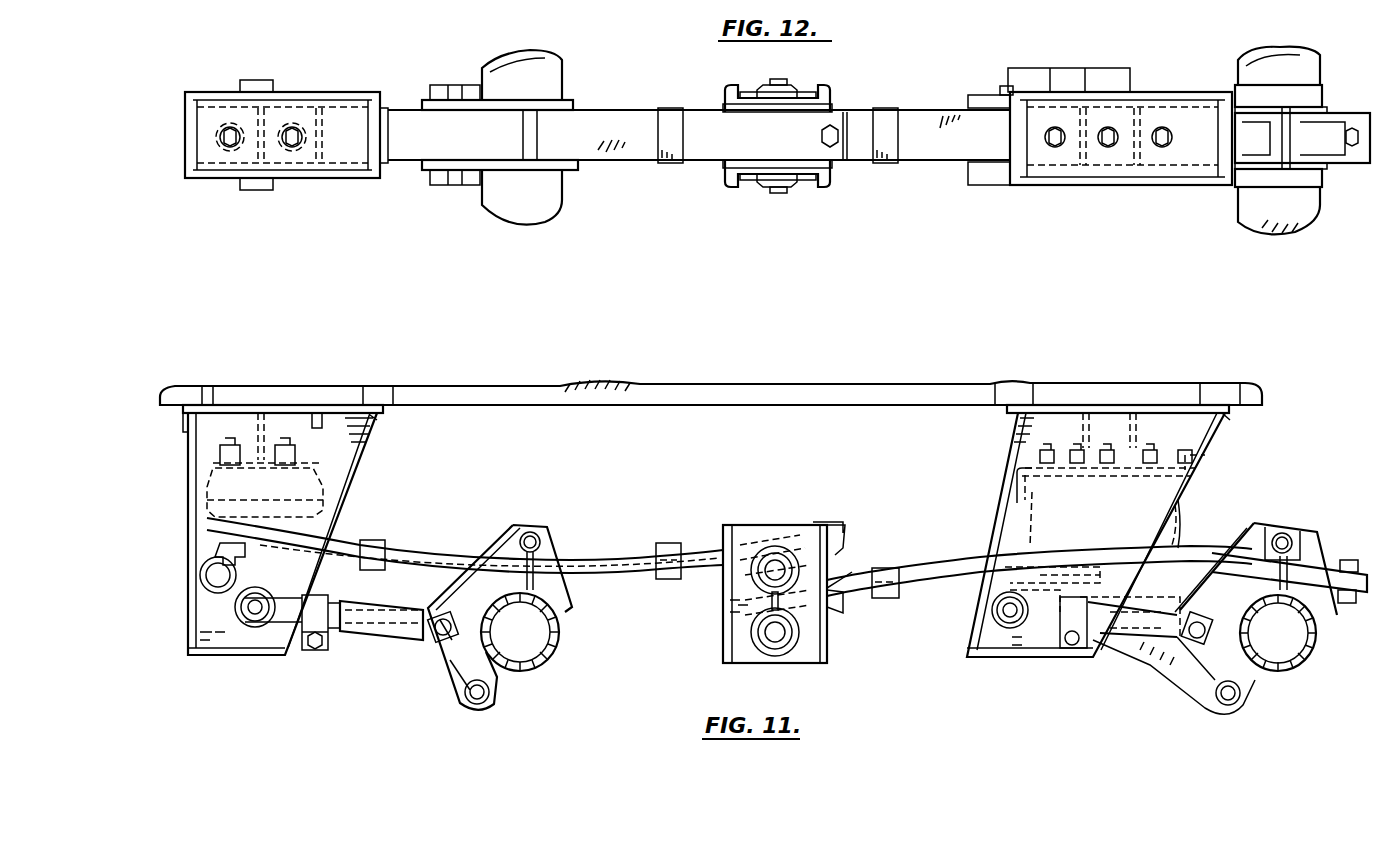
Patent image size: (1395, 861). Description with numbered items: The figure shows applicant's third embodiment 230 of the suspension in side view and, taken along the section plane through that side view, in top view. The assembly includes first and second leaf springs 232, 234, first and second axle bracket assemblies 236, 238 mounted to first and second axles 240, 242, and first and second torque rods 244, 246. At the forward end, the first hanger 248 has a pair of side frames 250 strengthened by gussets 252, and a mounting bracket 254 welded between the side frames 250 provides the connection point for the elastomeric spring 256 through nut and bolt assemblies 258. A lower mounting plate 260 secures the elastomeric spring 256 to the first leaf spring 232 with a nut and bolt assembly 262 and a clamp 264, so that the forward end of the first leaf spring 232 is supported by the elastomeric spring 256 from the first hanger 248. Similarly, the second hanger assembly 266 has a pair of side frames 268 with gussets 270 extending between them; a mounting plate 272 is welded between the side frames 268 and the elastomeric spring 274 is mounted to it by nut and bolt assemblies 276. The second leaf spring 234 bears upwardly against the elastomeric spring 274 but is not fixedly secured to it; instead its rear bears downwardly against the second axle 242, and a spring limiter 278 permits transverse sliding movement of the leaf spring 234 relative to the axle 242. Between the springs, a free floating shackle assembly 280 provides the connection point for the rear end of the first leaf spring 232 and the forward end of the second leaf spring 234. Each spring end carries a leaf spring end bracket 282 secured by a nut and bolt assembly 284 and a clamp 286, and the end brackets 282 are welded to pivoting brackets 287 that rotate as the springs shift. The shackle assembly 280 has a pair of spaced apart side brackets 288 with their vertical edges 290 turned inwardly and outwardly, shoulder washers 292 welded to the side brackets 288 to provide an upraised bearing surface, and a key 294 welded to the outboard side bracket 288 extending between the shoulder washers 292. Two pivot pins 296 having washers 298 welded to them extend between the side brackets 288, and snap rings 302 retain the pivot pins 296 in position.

In FIG. 12, the third embodiment 230 is at (694, 222).
In FIG. 11, the third embodiment 230 is at (658, 678).
In FIG. 12, the first leaf spring 232 is at (636, 160).
In FIG. 11, the first leaf spring 232 is at (603, 558).
In FIG. 12, the second leaf spring 234 is at (954, 160).
In FIG. 11, the second leaf spring 234 is at (937, 560).
In FIG. 12, the first axle bracket assembly 236 is at (463, 182).
In FIG. 11, the first axle bracket assembly 236 is at (485, 552).
In FIG. 12, the second axle bracket assembly 238 is at (1322, 85).
In FIG. 11, the second axle bracket assembly 238 is at (1326, 615).
In FIG. 12, the first axle 240 is at (508, 210).
In FIG. 11, the first axle 240 is at (536, 655).
In FIG. 12, the second axle 242 is at (1265, 215).
In FIG. 11, the second axle 242 is at (1288, 668).
In FIG. 11, the first torque rod 244 is at (359, 646).
In FIG. 11, the second torque rod 246 is at (1143, 658).
In FIG. 12, the first hanger 248 is at (329, 178).
In FIG. 11, the first hanger 248 is at (364, 456).
In FIG. 11, the side frames 250 is at (330, 418).
In FIG. 12, the gussets 252 is at (262, 112).
In FIG. 11, the gussets 252 is at (268, 432).
In FIG. 11, the mounting bracket 254 is at (345, 470).
In FIG. 12, the elastomeric spring 256 is at (338, 130).
In FIG. 11, the elastomeric spring 256 is at (322, 520).
In FIG. 12, the nut and bolt assemblies 258 is at (292, 142).
In FIG. 11, the nut and bolt assemblies 258 is at (262, 442).
In FIG. 11, the lower mounting plate 260 is at (372, 542).
In FIG. 11, the nut and bolt assembly 262 is at (248, 556).
In FIG. 12, the clamp 264 is at (387, 166).
In FIG. 11, the clamp 264 is at (372, 570).
In FIG. 12, the second hanger assembly 266 is at (984, 181).
In FIG. 11, the second hanger assembly 266 is at (1004, 476).
In FIG. 12, the side frames 268 is at (1168, 122).
In FIG. 11, the side frames 268 is at (1018, 462).
In FIG. 12, the gussets 270 is at (1150, 120).
In FIG. 11, the gussets 270 is at (1180, 430).
In FIG. 11, the mounting plate 272 is at (1200, 455).
In FIG. 11, the elastomeric spring 274 is at (1180, 510).
In FIG. 12, the nut and bolt assemblies 276 is at (1160, 148).
In FIG. 11, the nut and bolt assemblies 276 is at (1060, 457).
In FIG. 12, the spring limiter 278 is at (1336, 118).
In FIG. 11, the spring limiter 278 is at (1318, 536).
In FIG. 12, the free floating shackle assembly 280 is at (836, 87).
In FIG. 11, the free floating shackle assembly 280 is at (772, 527).
In FIG. 12, the leaf spring end bracket 282 is at (706, 150).
In FIG. 11, the leaf spring end bracket 282 is at (692, 545).
In FIG. 12, the nut and bolt assembly 284 is at (848, 148).
In FIG. 11, the nut and bolt assembly 284 is at (832, 530).
In FIG. 12, the clamp 286 is at (668, 165).
In FIG. 11, the clamp 286 is at (668, 580).
In FIG. 12, the pivoting brackets 287 is at (740, 108).
In FIG. 12, the side brackets 288 is at (730, 86).
In FIG. 12, the vertical edges 290 is at (728, 106).
In FIG. 12, the shoulder washers 292 is at (812, 92).
In FIG. 11, the key 294 is at (740, 618).
In FIG. 12, the pivot pins 296 is at (786, 86).
In FIG. 12, the washers 298 is at (764, 190).
In FIG. 11, the washers 298 is at (828, 572).
In FIG. 12, the snap rings 302 is at (770, 80).